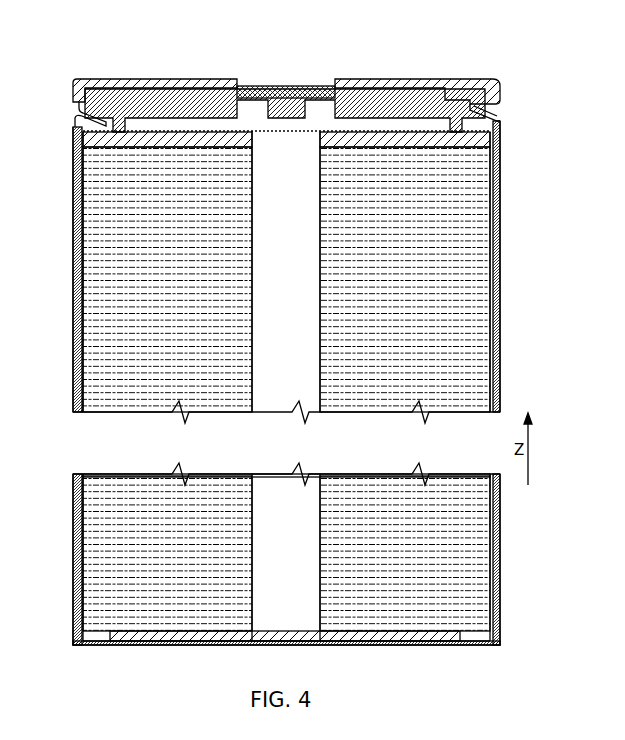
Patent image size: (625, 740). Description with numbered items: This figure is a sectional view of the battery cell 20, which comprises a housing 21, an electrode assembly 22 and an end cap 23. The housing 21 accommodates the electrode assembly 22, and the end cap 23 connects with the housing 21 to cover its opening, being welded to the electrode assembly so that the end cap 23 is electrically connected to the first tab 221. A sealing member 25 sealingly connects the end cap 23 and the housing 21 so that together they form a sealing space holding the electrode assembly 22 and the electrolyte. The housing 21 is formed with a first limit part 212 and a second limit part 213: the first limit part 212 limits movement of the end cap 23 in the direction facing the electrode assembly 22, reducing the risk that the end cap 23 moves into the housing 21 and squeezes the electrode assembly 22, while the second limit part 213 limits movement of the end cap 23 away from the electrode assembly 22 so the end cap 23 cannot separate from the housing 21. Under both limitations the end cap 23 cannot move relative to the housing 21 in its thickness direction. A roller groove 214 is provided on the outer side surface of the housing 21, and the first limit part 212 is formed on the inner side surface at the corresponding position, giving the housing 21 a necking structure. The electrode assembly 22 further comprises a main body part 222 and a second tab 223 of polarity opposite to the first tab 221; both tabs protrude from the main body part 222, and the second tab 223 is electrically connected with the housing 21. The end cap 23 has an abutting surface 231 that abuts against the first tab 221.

The battery cell 20 is at (288, 25).
The housing 21 is at (74, 330).
The electrode assembly 22 is at (491, 352).
The end cap 23 is at (146, 98).
The sealing member 25 is at (440, 79).
The first limit part 212 is at (80, 108).
The second limit part 213 is at (96, 79).
The roller groove 214 is at (497, 111).
The first tab 221 is at (245, 140).
The main body part 222 is at (457, 540).
The second tab 223 is at (452, 638).
The abutting surface 231 is at (420, 134).